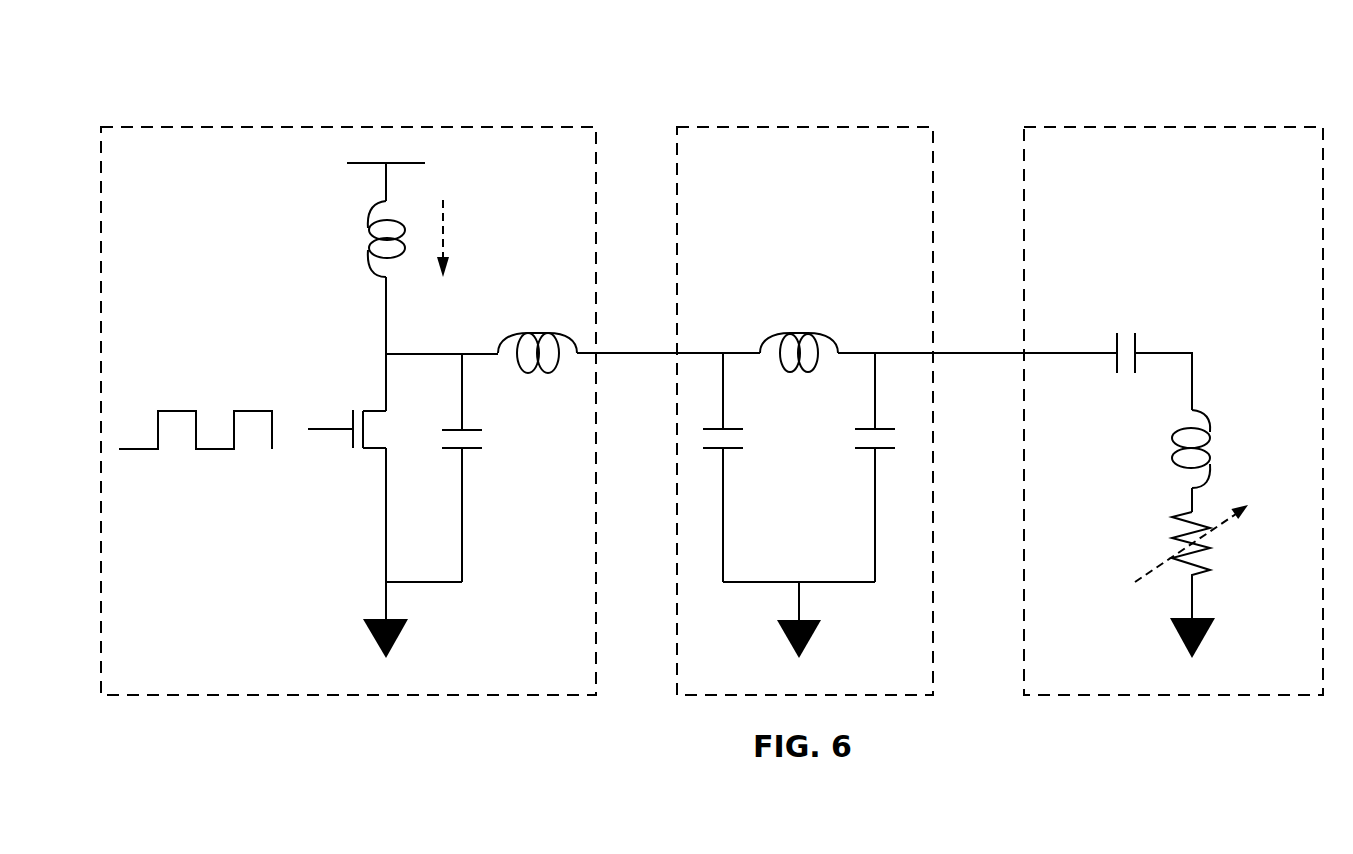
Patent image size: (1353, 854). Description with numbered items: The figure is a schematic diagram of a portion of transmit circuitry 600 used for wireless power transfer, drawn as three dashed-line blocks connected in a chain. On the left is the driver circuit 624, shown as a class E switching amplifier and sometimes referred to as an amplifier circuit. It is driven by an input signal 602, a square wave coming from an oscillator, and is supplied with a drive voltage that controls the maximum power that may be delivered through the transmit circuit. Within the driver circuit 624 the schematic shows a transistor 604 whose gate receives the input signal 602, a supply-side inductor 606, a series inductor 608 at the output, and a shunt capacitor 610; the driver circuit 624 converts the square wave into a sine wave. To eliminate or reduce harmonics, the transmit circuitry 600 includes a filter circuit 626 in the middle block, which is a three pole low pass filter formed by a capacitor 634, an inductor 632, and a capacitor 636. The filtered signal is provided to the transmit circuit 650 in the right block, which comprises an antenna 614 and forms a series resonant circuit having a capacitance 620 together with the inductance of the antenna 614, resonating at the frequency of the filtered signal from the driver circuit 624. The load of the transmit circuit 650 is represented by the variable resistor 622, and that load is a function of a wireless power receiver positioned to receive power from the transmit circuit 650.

The transmit circuitry 600 is at (270, 78).
The input signal 602 is at (172, 410).
The transistor 604 is at (373, 406).
The inductor 606 is at (368, 220).
The inductor 608 is at (540, 333).
The capacitor 610 is at (467, 430).
The antenna 614 is at (1200, 413).
The capacitance 620 is at (1135, 343).
The variable resistor 622 is at (1185, 512).
The driver circuit 624 is at (462, 128).
The filter circuit 626 is at (862, 128).
The inductor 632 is at (815, 333).
The capacitor 634 is at (733, 430).
The capacitor 636 is at (885, 430).
The transmit circuit 650 is at (1242, 127).